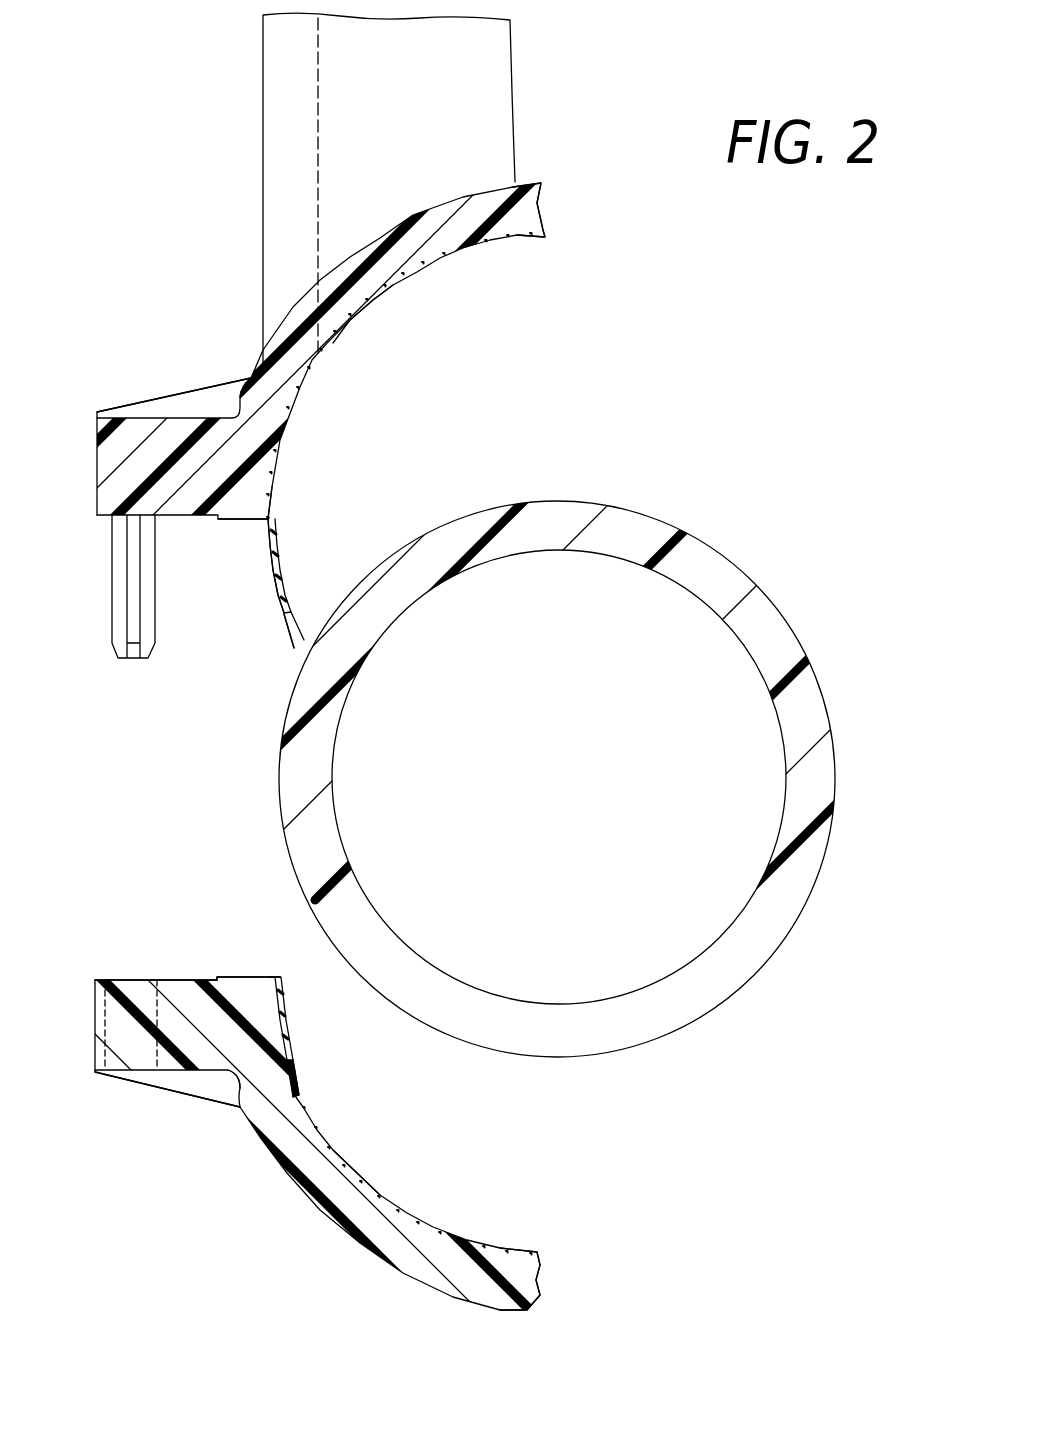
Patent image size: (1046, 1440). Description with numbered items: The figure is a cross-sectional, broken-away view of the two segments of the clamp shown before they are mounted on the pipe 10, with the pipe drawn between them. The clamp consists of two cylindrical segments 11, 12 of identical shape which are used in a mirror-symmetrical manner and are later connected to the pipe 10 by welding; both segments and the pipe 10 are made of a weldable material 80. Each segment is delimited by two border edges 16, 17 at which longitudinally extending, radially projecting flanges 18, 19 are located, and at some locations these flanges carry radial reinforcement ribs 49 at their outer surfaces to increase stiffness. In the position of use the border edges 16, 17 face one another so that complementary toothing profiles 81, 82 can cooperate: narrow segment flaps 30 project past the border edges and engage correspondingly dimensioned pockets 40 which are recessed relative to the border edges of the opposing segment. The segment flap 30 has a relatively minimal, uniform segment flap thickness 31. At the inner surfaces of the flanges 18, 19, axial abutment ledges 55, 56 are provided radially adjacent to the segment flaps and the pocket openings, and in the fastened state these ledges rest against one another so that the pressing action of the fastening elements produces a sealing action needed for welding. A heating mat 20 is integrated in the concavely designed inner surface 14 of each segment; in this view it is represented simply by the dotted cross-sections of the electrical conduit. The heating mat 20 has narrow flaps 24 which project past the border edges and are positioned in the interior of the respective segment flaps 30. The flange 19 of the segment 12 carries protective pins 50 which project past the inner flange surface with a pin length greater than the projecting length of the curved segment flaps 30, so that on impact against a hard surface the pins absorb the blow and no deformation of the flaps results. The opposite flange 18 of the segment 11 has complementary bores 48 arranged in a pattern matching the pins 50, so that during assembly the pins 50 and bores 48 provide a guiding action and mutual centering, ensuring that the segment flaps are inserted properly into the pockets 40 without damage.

The pipe 10 is at (740, 538).
The cylindrical segment 11 is at (280, 1208).
The cylindrical segment 12 is at (160, 276).
The inner surface 14 is at (514, 251).
The border edge 16 is at (179, 977).
The border edge 17 is at (179, 518).
The flange 18 is at (225, 1090).
The flange 19 is at (232, 397).
The heating mat 20 is at (365, 339).
The narrow flap 24 is at (287, 515).
The narrow segment flap 30 is at (268, 607).
The segment flap thickness 31 is at (308, 619).
The pocket 40 is at (287, 977).
The bore 48 is at (127, 977).
The radial reinforcement rib 49 is at (244, 372).
The protective pin 50 is at (120, 626).
The axial abutment ledge 55 is at (243, 976).
The axial abutment ledge 56 is at (235, 519).
The weldable material 80 is at (523, 213).
The toothing profile 81 is at (272, 959).
The toothing profile 82 is at (270, 625).